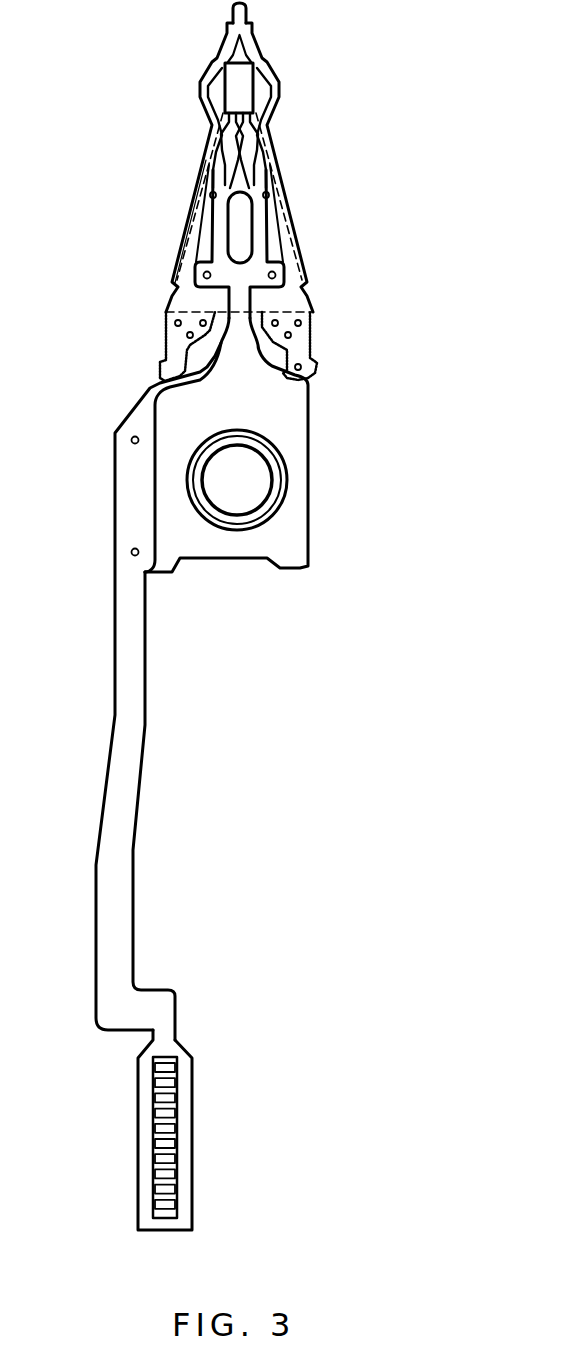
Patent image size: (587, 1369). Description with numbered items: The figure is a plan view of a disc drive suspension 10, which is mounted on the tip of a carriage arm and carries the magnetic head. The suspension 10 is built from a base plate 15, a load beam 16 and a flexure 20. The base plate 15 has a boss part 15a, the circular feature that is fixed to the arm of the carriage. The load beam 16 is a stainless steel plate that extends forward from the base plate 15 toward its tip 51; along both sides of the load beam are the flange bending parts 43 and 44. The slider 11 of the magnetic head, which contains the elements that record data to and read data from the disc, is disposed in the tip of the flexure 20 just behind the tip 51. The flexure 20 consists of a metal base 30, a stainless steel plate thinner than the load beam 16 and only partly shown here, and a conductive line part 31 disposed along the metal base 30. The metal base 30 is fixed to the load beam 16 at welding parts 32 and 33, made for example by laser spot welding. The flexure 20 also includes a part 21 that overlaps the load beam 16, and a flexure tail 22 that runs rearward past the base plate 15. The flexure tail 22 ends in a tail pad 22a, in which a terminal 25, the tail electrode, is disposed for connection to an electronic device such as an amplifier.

The suspension 10 is at (170, 186).
The tip of the load beam 51 is at (247, 12).
The slider 11 is at (240, 87).
The flange bending part 43 is at (203, 177).
The flange bending part 44 is at (283, 160).
The welding part 32 is at (212, 197).
The welding part 33 is at (268, 166).
The metal base 30 is at (263, 250).
The flexure 20 is at (267, 222).
The load beam 16 is at (195, 253).
The part overlapping the load beam 21 is at (220, 277).
The conductive line part 31 is at (243, 300).
The base plate 15 is at (233, 543).
The boss part 15a is at (263, 466).
The flexure tail 22 is at (105, 852).
The tail pad 22a is at (211, 1051).
The terminal 25 is at (153, 1068).